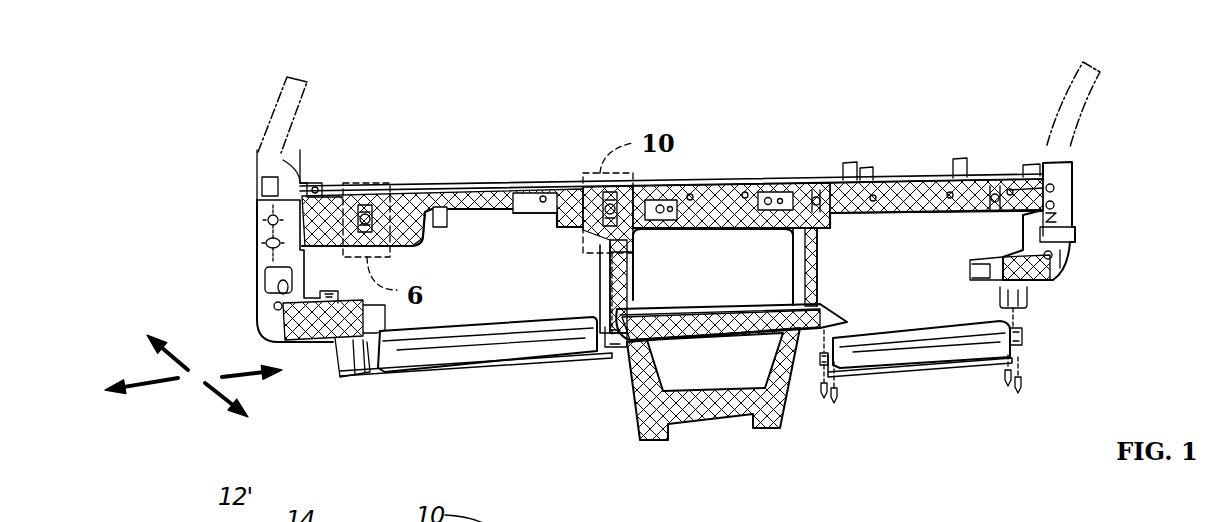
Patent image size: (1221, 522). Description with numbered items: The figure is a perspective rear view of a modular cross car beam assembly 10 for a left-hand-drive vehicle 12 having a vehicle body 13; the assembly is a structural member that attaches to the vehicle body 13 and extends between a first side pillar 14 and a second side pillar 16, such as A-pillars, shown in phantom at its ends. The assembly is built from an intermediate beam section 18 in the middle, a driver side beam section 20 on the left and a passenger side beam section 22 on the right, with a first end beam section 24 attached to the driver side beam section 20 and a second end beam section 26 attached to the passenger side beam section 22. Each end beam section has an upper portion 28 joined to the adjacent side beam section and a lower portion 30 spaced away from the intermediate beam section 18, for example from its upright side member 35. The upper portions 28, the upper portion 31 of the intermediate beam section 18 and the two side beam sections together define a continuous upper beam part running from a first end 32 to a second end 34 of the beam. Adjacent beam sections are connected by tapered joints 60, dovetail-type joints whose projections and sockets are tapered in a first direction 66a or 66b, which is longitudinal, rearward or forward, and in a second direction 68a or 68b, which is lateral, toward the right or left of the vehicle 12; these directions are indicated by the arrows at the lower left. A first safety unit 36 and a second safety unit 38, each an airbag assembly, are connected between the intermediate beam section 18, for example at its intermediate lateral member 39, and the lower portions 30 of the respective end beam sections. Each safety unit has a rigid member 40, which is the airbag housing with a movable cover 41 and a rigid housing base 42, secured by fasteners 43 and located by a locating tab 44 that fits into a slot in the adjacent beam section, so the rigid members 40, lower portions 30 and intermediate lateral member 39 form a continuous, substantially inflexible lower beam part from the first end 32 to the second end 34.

The cross car beam assembly 10 is at (417, 84).
The vehicle 12 is at (190, 86).
The vehicle body 13 is at (200, 136).
The first side pillar 14 is at (276, 94).
The second side pillar 16 is at (1095, 104).
The intermediate beam section 18 is at (735, 185).
The driver side beam section 20 is at (478, 186).
The passenger side beam section 22 is at (905, 176).
The first end beam section 24 is at (320, 184).
The second end beam section 26 is at (1075, 198).
The upper portion 28 is at (333, 197).
The lower portion 30 is at (340, 378).
The upper portion of the intermediate beam section 31 is at (725, 228).
The first end 32 is at (250, 262).
The second end 34 is at (1076, 210).
The upright side member 35 is at (598, 268).
The first safety unit 36 is at (463, 398).
The second safety unit 38 is at (907, 388).
The intermediate lateral member 39 is at (690, 305).
The rigid member 40 is at (500, 372).
The cover 41 is at (505, 323).
The housing base 42 is at (565, 365).
The fasteners 43 is at (825, 402).
The locating tab 44 is at (603, 325).
The tapered joint 60 is at (383, 173).
The first direction 66a is at (218, 407).
The first direction 66b is at (184, 357).
The second direction 68a is at (245, 377).
The second direction 68b is at (138, 378).